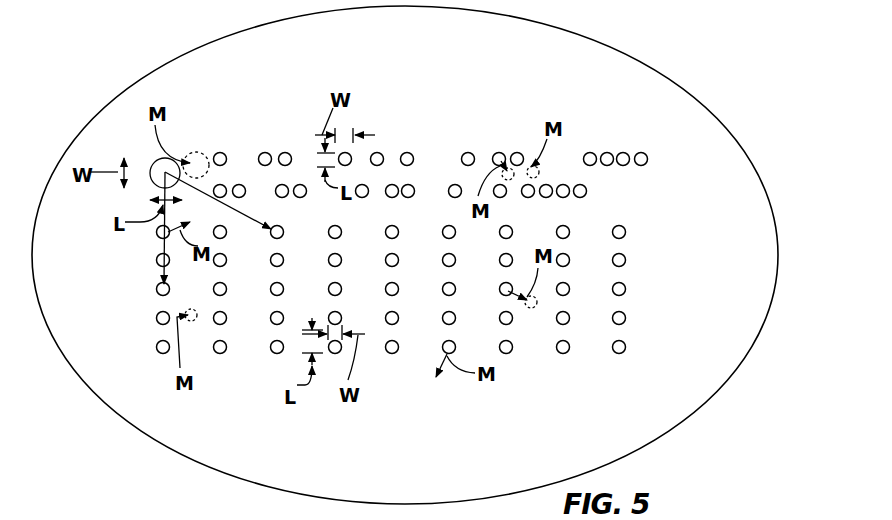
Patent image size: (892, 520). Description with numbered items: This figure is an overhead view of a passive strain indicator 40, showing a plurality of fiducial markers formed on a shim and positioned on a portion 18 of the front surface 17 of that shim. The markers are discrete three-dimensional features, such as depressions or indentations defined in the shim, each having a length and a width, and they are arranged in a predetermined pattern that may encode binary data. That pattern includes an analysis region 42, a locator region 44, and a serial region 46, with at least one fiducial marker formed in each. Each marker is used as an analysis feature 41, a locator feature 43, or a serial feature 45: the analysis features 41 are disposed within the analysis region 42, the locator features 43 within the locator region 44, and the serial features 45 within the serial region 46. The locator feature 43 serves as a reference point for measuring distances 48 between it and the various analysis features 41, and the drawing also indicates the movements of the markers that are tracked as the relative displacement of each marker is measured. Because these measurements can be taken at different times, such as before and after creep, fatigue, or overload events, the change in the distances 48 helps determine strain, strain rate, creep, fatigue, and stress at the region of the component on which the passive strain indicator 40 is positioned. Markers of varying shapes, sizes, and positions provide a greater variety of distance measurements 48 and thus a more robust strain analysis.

The front surface 17 is at (102, 510).
The portion 18 is at (540, 73).
The passive strain indicator 40 is at (690, 329).
The analysis feature 41 is at (223, 353).
The analysis region 42 is at (375, 372).
The locator feature 43 is at (155, 165).
The locator region 44 is at (189, 150).
The serial feature 45 is at (266, 152).
The serial region 46 is at (392, 127).
The distance measurements 48 is at (262, 225).